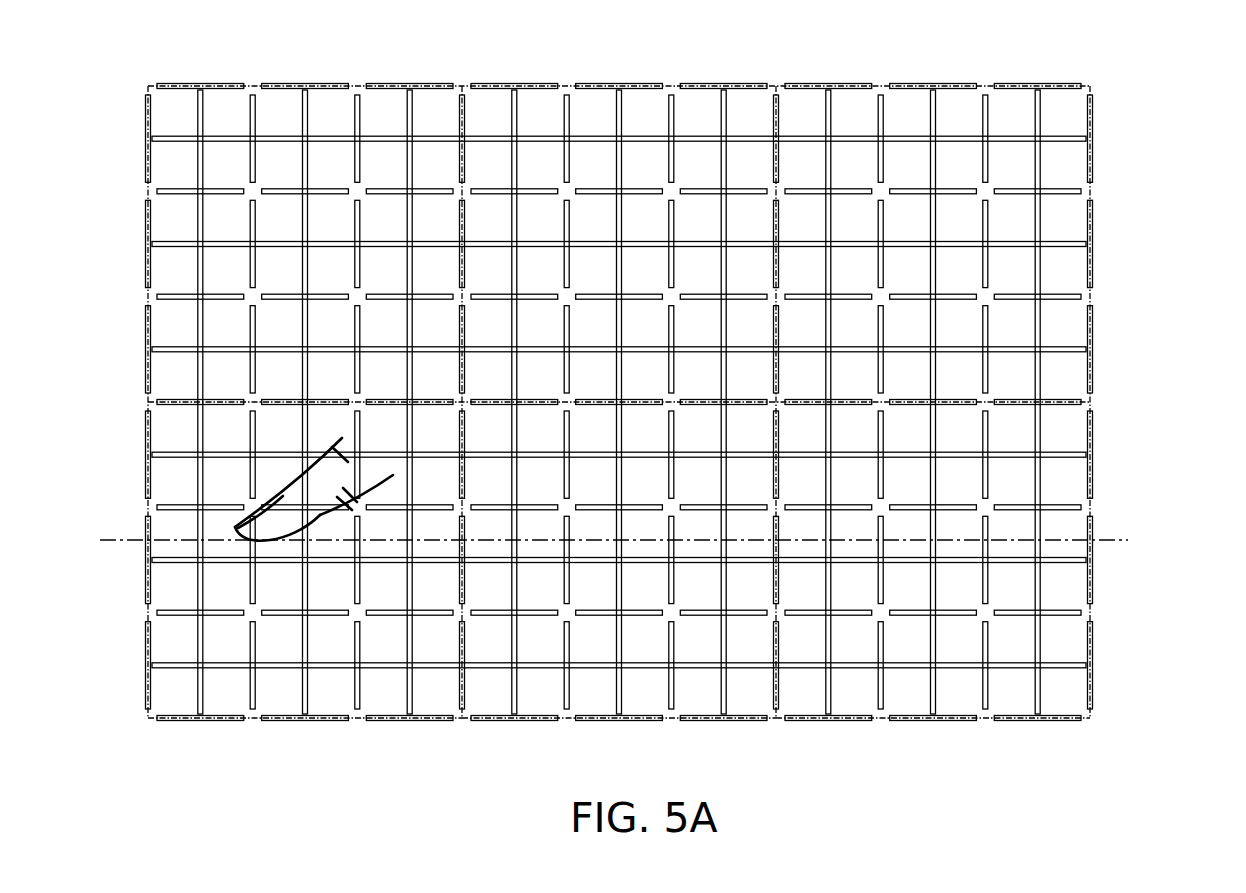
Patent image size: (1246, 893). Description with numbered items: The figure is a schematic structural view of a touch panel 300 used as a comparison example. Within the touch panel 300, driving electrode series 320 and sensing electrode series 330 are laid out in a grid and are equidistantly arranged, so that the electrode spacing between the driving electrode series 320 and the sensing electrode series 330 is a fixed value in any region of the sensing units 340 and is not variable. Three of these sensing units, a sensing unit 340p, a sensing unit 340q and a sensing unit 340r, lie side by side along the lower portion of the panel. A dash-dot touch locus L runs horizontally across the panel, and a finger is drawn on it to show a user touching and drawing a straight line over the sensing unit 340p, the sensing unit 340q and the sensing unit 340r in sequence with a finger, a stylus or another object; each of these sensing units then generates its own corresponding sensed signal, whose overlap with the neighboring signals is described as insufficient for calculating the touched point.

The touch panel 300 is at (1192, 773).
The driving electrode series 320 is at (1069, 347).
The sensing electrode series 330 is at (307, 107).
The sensing units 340 is at (273, 83).
The sensing unit 340p is at (255, 722).
The sensing unit 340q is at (668, 722).
The sensing unit 340r is at (982, 717).
The cutting line L is at (1110, 540).